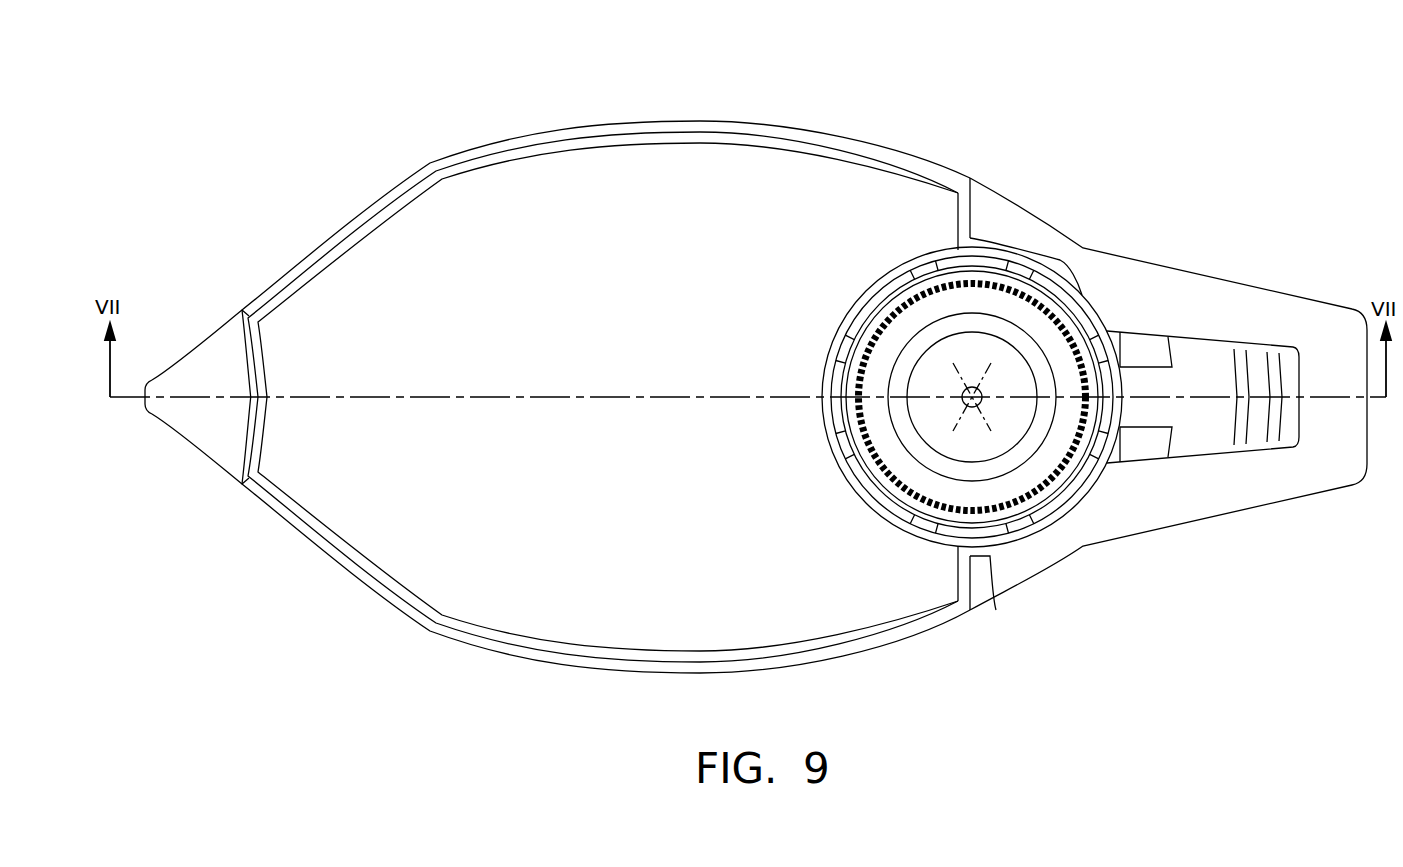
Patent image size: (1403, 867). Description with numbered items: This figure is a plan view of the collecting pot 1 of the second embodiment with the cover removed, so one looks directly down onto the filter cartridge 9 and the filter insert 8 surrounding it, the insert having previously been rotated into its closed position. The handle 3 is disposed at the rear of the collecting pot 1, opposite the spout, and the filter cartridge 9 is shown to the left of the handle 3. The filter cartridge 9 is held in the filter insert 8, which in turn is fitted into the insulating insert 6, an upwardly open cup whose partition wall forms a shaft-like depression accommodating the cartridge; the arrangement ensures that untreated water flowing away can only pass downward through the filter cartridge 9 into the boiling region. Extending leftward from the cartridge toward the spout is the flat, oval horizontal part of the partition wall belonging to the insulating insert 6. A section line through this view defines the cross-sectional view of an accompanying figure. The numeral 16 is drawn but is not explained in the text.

The collecting pot 1 is at (750, 123).
The handle 3 is at (1327, 303).
The insulating insert 6 is at (900, 633).
The filter insert 8 is at (880, 500).
The filter cartridge 9 is at (975, 442).
The connector 16 is at (1188, 343).